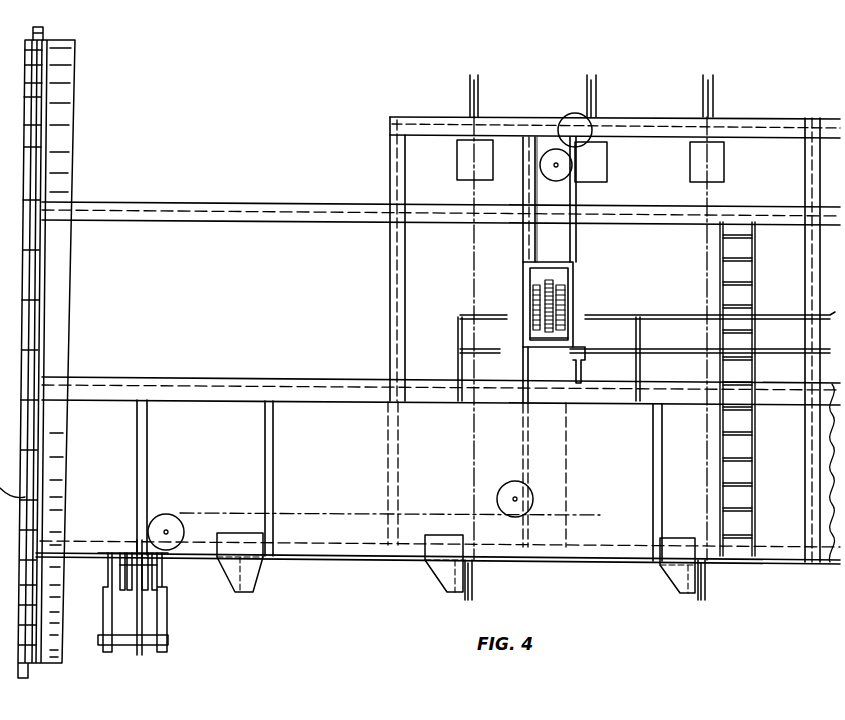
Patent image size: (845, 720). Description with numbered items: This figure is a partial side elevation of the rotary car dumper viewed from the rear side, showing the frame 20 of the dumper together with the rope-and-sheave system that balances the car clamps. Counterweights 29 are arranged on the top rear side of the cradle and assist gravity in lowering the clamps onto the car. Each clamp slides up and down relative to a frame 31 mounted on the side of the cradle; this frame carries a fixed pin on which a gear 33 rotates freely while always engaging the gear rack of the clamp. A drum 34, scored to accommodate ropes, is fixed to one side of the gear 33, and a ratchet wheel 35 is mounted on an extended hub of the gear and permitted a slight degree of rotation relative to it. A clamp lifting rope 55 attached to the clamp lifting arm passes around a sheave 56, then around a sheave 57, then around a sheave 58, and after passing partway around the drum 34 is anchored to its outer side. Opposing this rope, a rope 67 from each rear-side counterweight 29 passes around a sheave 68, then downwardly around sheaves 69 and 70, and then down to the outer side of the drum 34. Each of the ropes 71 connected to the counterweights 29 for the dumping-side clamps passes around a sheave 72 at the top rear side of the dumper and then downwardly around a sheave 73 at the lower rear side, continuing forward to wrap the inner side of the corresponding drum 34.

The frame 20 is at (217, 203).
The counterweights 29 is at (458, 164).
The frame 31 is at (574, 267).
The gear 33 is at (549, 281).
The drum 34 is at (533, 296).
The ratchet wheel 35 is at (566, 293).
The rope 55 is at (232, 513).
The sheave 56 is at (165, 567).
The sheave 57 is at (166, 515).
The sheave 58 is at (508, 487).
The rope 67 is at (537, 257).
The sheave 68 is at (597, 93).
The sheave 69 is at (562, 119).
The sheave 70 is at (545, 177).
The ropes 71 is at (474, 250).
The sheave 72 is at (479, 93).
The sheave 73 is at (473, 581).